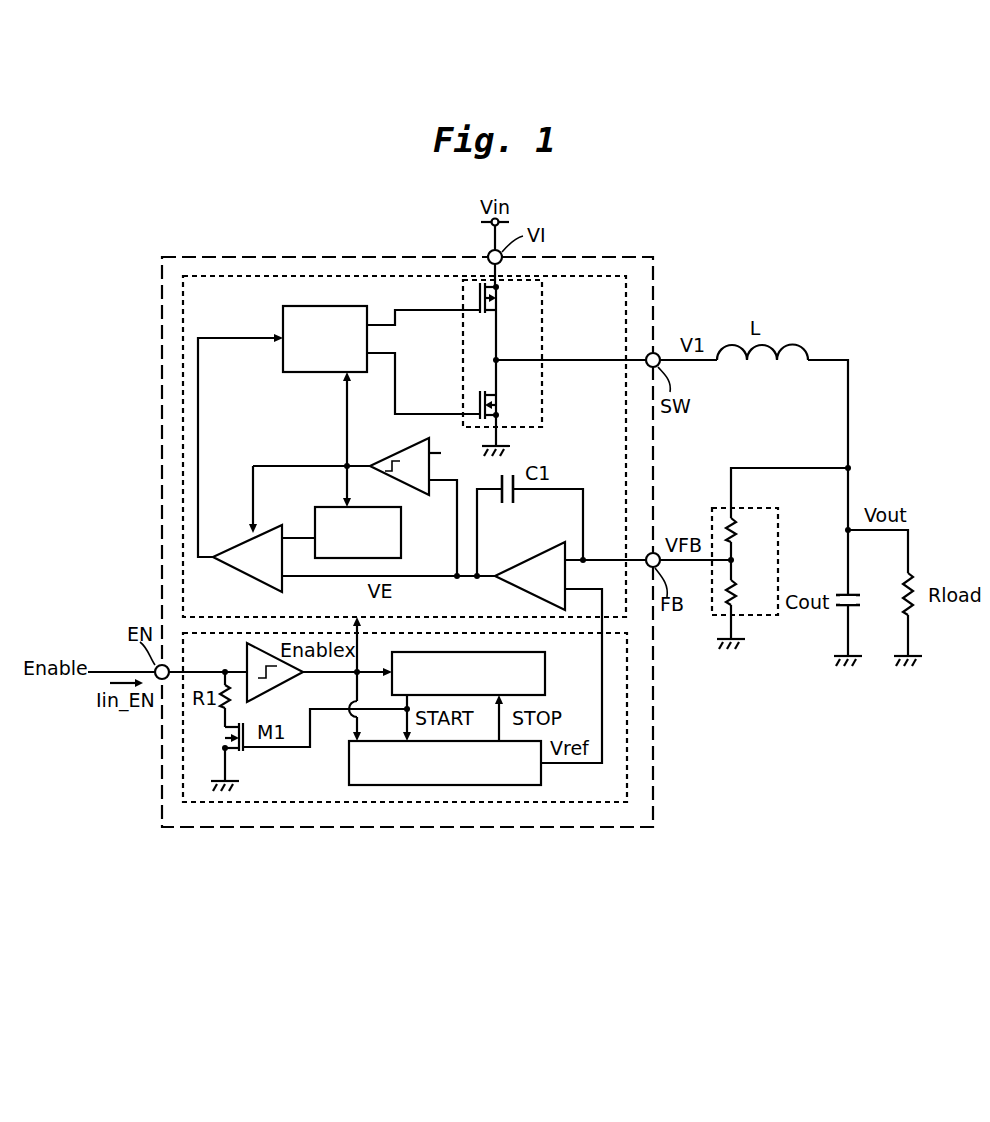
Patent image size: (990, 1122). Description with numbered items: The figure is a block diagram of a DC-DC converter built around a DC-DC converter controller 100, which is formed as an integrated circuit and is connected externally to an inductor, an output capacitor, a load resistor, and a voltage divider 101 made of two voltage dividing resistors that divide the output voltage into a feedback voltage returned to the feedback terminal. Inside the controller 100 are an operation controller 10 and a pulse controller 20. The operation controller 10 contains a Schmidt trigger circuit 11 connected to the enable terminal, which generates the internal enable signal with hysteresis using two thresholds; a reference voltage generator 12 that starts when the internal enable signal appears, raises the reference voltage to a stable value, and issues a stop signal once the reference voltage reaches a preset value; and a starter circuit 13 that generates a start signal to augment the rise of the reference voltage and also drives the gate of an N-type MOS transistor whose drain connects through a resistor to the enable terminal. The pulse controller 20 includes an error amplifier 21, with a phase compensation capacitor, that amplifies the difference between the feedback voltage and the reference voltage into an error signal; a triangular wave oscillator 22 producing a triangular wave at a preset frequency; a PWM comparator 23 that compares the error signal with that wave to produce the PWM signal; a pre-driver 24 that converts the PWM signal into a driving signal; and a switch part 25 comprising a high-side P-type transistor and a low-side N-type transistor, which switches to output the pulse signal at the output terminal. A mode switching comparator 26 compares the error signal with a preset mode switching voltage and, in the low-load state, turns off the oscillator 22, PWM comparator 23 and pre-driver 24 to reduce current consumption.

The DC-DC converter controller 100 is at (578, 253).
The pulse controller 20 is at (627, 296).
The switch part 25 is at (543, 330).
The pre-driver 24 is at (307, 372).
The mode switching comparator 26 is at (393, 445).
The PWM comparator 23 is at (227, 547).
The triangular wave oscillator 22 is at (327, 506).
The error amplifier 21 is at (525, 558).
The operation controller 10 is at (627, 738).
The Schmidt trigger circuit 11 is at (272, 685).
The reference voltage generator 12 is at (542, 778).
The starter circuit 13 is at (547, 672).
The voltage divider 101 is at (780, 518).